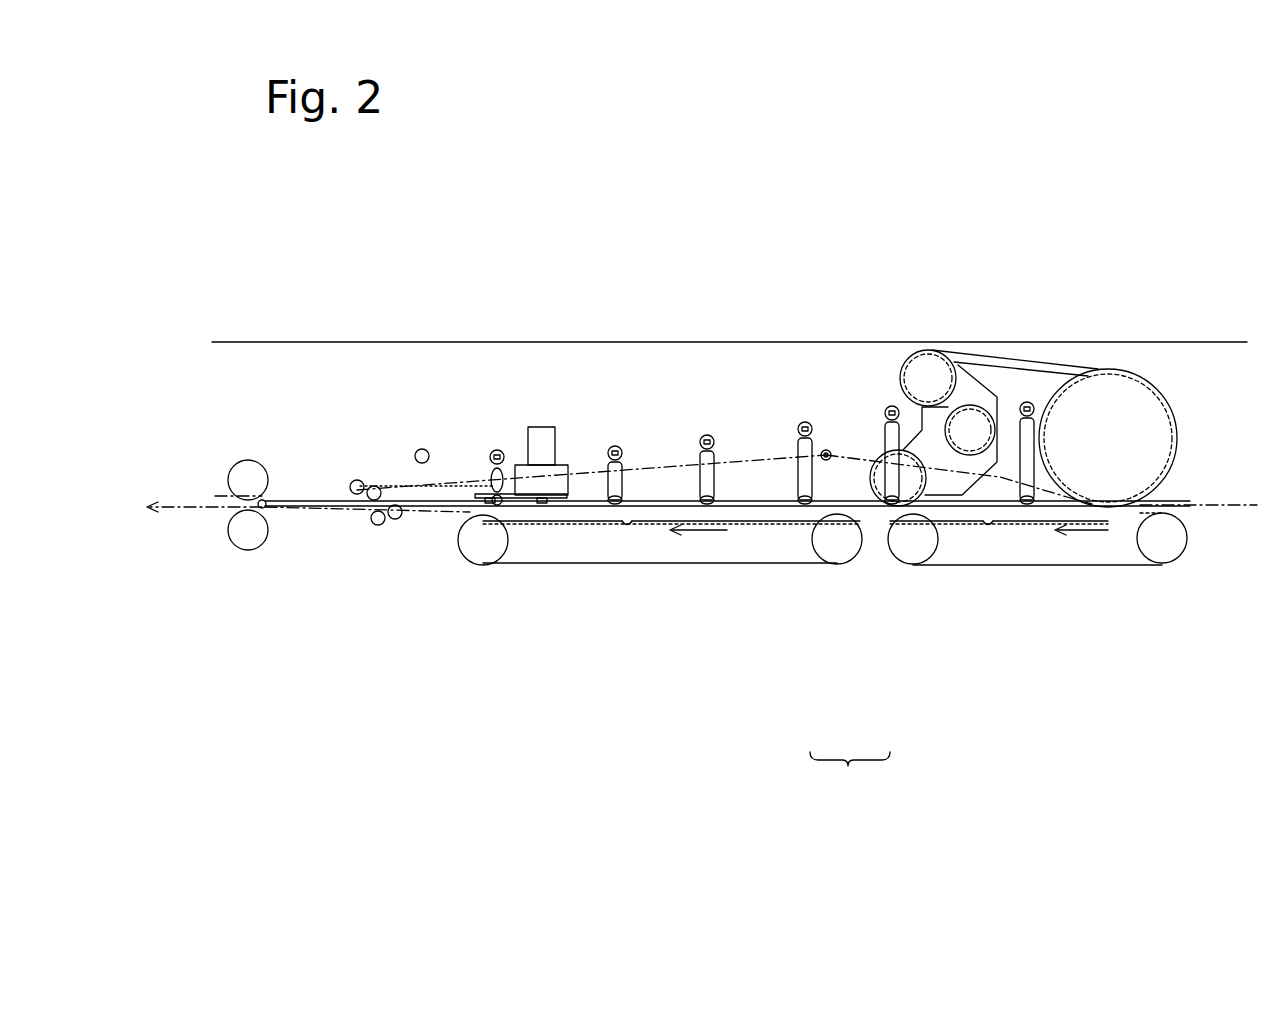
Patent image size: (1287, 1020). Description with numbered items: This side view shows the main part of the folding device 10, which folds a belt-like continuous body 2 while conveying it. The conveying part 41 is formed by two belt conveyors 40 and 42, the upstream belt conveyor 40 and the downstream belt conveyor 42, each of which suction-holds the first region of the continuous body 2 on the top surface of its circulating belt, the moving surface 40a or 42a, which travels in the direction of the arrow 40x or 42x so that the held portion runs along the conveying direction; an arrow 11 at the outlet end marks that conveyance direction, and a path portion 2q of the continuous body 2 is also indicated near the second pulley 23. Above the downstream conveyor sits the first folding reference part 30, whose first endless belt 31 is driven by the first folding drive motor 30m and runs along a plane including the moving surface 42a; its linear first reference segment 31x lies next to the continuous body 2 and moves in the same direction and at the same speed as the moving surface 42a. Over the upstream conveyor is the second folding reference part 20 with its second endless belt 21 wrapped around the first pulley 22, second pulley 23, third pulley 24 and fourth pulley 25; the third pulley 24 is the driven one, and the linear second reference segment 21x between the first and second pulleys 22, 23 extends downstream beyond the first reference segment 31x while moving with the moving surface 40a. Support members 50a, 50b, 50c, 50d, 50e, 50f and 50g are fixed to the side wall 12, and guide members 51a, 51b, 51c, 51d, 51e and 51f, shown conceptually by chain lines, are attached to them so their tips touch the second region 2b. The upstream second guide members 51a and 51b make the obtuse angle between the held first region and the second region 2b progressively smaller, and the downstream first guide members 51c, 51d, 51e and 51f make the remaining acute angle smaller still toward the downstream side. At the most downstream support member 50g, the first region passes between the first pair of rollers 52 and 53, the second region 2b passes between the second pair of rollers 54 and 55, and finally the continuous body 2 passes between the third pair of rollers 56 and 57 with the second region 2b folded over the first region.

The folding device 10 is at (1189, 195).
The side wall 12 is at (383, 341).
The continuous body 2 is at (1212, 500).
The second region 2b is at (790, 460).
The sheet path 2q is at (973, 497).
The conveyance direction 11 is at (181, 512).
The second folding reference part 20 is at (922, 294).
The second endless belt 21 is at (1018, 357).
The second reference segment 21x is at (988, 525).
The first pulley 22 is at (1160, 408).
The second pulley 23 is at (912, 495).
The third pulley 24 is at (972, 422).
The fourth pulley 25 is at (920, 368).
The first folding reference part 30 is at (510, 288).
The first folding drive motor 30m is at (542, 430).
The first endless belt 31 is at (583, 503).
The first reference segment 31x is at (627, 527).
The belt conveyor 40 is at (937, 567).
The moving surface 40a is at (1042, 510).
The arrow 40x is at (1087, 532).
The conveying part 41 is at (850, 777).
The belt conveyor 42 is at (770, 565).
The moving surface 42a is at (723, 504).
The arrow 42x is at (705, 530).
The support member 50a is at (1030, 400).
The support member 50b is at (890, 405).
The support member 50c is at (800, 422).
The support member 50d is at (704, 435).
The support member 50e is at (618, 446).
The support member 50f is at (497, 450).
The support member 50g is at (421, 449).
The second guide member 51a is at (1008, 520).
The second guide member 51b is at (882, 505).
The first guide member 51c is at (814, 490).
The first guide member 51d is at (693, 475).
The first guide member 51e is at (596, 478).
The first guide member 51f is at (483, 487).
The roller 52 is at (397, 520).
The roller 53 is at (376, 526).
The roller 54 is at (376, 486).
The roller 55 is at (353, 480).
The roller 56 is at (251, 470).
The roller 57 is at (251, 540).